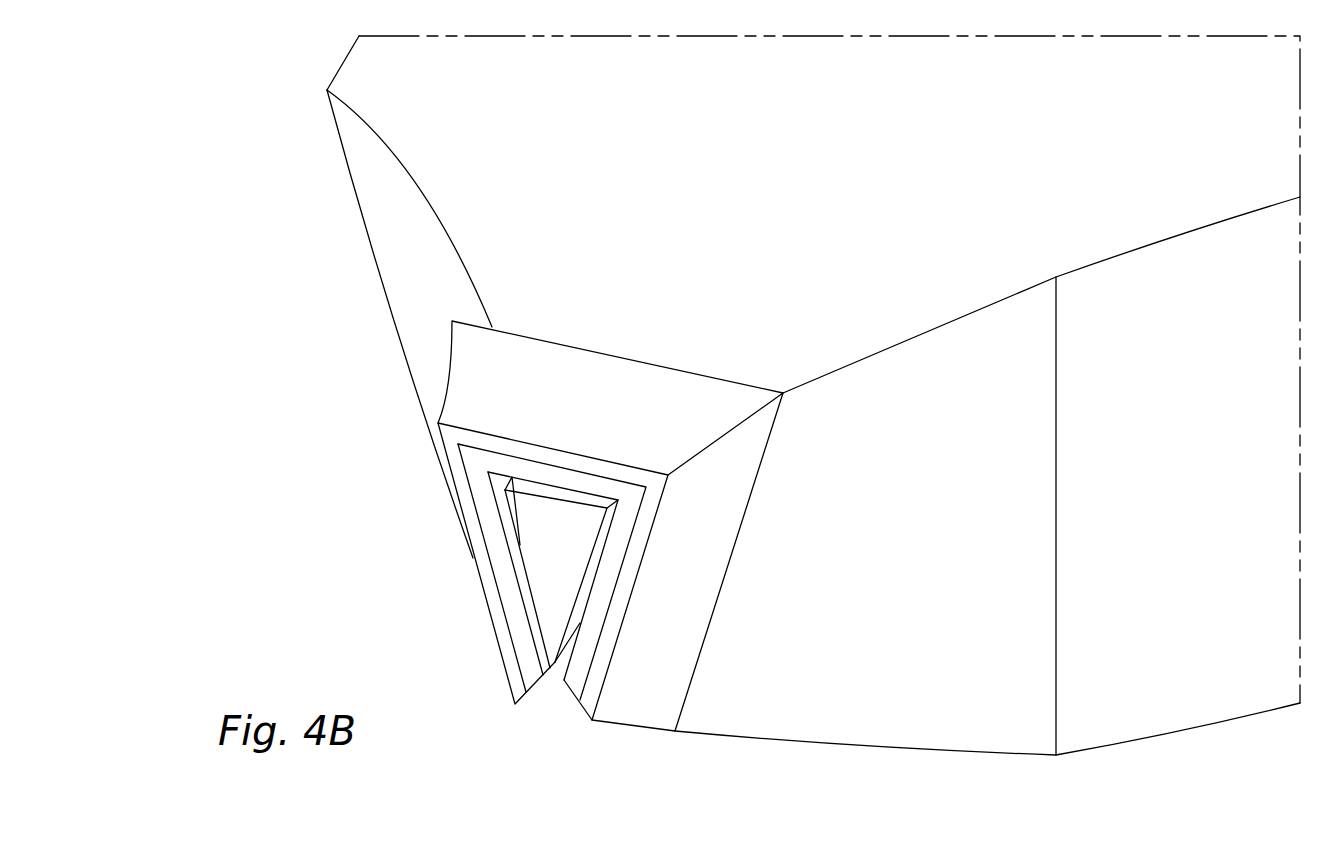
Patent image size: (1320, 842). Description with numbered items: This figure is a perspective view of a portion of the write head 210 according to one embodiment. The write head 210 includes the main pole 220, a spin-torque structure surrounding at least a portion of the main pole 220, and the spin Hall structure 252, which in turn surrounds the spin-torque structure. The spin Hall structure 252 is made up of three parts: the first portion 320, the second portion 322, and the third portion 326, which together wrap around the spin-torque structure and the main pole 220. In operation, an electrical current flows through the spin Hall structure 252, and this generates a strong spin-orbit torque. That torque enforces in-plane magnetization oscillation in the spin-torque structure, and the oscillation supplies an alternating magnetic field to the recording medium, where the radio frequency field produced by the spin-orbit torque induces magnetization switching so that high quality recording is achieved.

The write head 210 is at (327, 263).
The first portion 320 is at (596, 368).
The third portion 326 is at (705, 579).
The main pole 220 is at (547, 576).
The second portion 322 is at (501, 626).
The spin Hall structure 252 is at (617, 738).